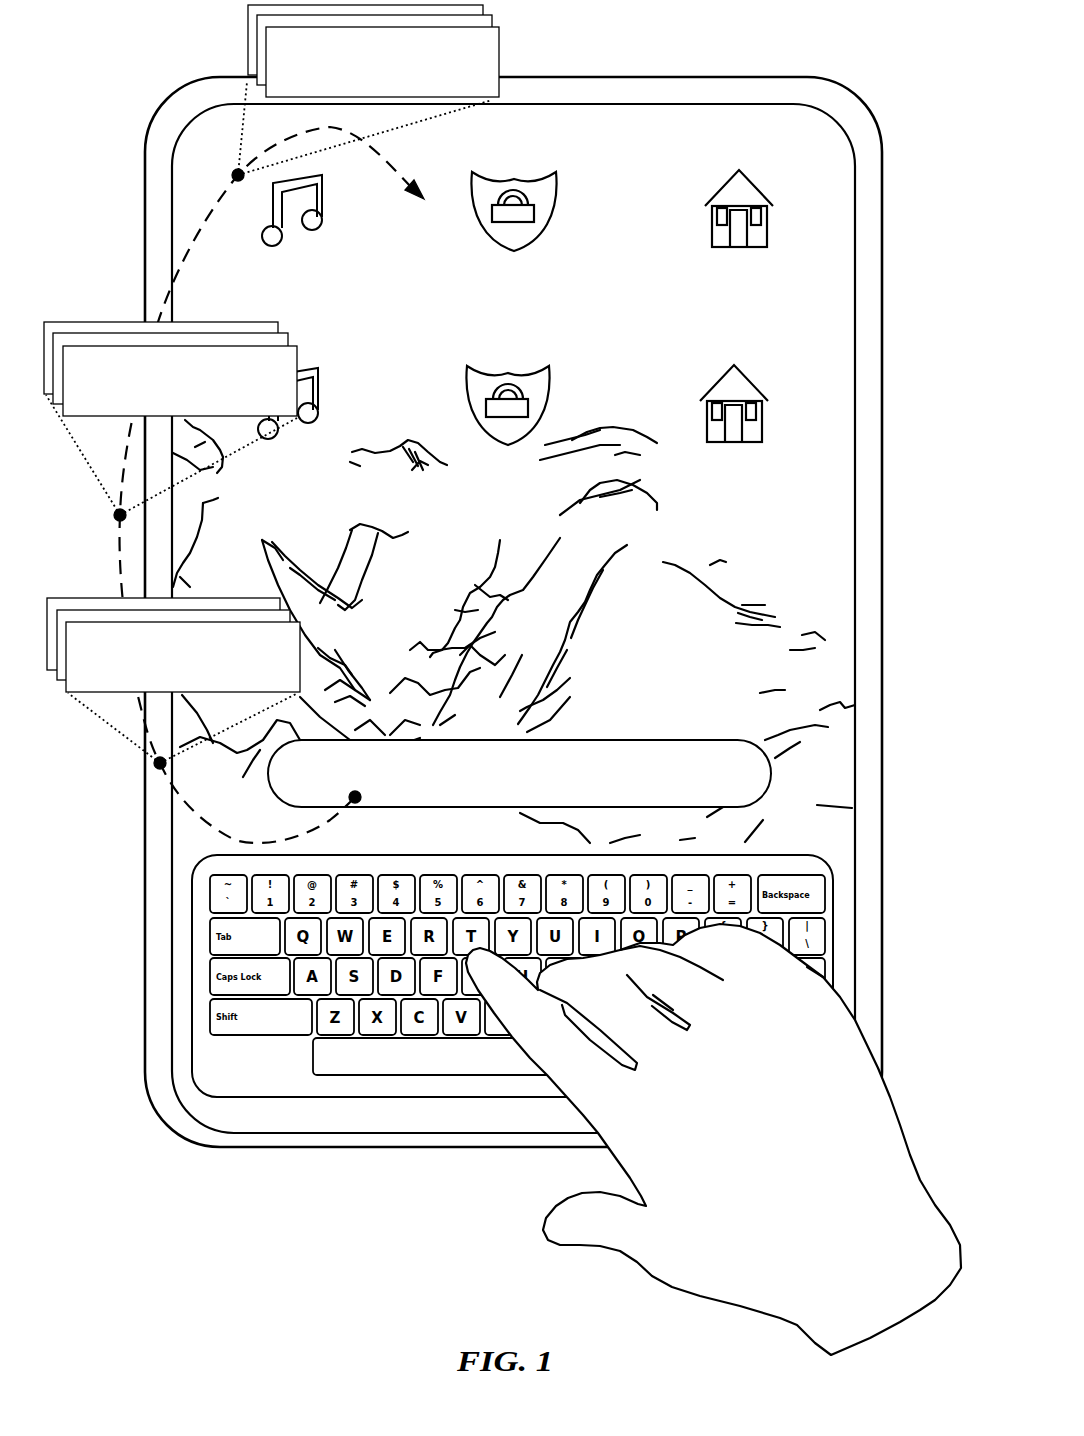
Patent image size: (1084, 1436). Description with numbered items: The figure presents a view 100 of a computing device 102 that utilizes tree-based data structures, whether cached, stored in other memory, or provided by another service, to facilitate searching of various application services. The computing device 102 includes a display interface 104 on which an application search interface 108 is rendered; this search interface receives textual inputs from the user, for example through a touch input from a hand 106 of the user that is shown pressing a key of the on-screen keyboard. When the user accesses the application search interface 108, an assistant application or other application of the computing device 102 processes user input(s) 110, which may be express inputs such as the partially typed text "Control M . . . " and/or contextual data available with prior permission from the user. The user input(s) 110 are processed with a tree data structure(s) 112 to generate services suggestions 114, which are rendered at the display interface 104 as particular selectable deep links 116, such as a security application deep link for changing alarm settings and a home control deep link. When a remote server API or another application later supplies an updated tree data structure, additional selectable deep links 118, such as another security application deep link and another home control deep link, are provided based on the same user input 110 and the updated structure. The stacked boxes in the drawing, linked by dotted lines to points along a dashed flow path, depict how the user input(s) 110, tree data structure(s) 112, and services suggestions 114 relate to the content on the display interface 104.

The view 100 is at (152, 58).
The computing device 102 is at (870, 118).
The display interface 104 is at (514, 480).
The hand 106 is at (757, 1151).
The application search interface 108 is at (678, 783).
The user input(s) 110 is at (168, 678).
The tree data structure(s) 112 is at (165, 414).
The services suggestions 114 is at (397, 95).
The selectable deep links 116 is at (577, 402).
The additional selectable deep links 118 is at (692, 183).